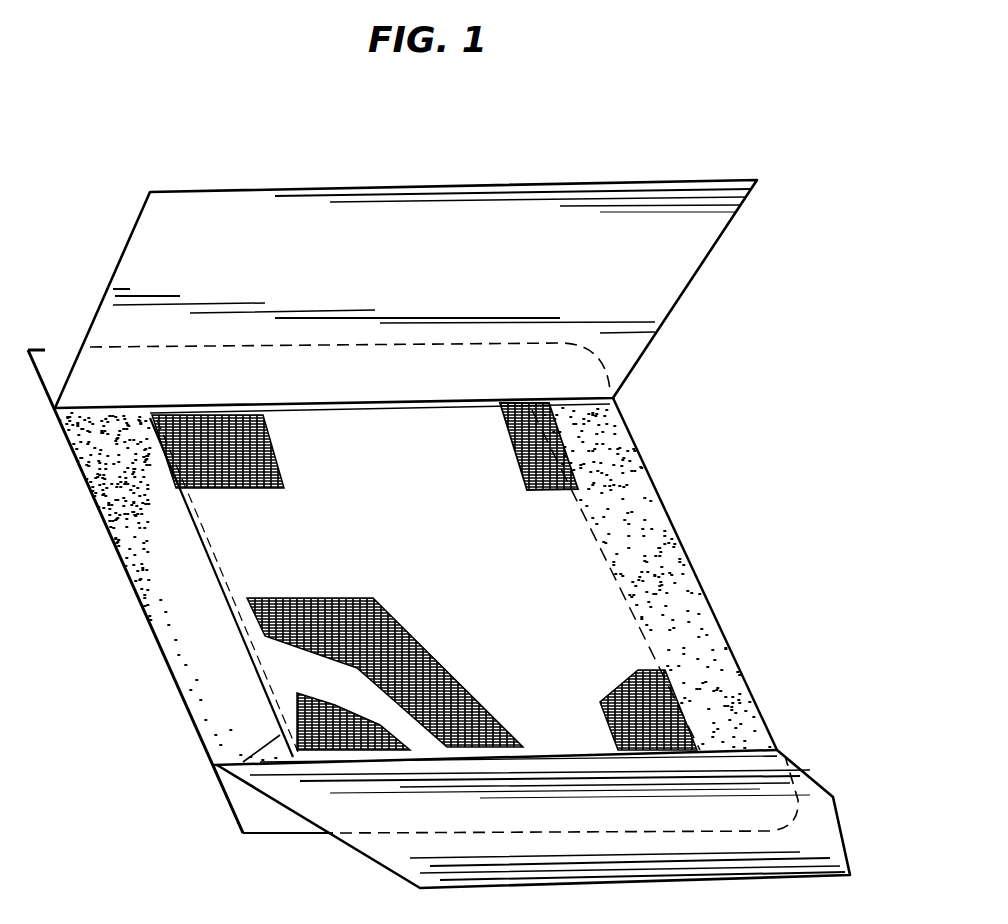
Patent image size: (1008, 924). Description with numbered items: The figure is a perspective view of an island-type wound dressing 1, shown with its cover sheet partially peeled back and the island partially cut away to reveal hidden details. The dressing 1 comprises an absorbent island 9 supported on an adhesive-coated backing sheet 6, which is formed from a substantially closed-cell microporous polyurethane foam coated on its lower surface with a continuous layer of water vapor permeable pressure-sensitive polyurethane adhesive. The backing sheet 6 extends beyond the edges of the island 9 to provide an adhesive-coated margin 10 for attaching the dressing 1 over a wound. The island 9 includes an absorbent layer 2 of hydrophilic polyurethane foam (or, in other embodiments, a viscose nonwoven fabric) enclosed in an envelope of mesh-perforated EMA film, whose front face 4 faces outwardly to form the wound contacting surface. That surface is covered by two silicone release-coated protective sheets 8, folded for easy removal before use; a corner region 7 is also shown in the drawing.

The wound dressing 1 is at (188, 758).
The absorbent layer 2 is at (313, 675).
The front face 4 is at (212, 418).
The backing sheet 6 is at (650, 525).
The corner 7 is at (238, 766).
The protective sheets 8 is at (153, 258).
The absorbent island 9 is at (577, 449).
The adhesive-coated margin 10 is at (178, 572).